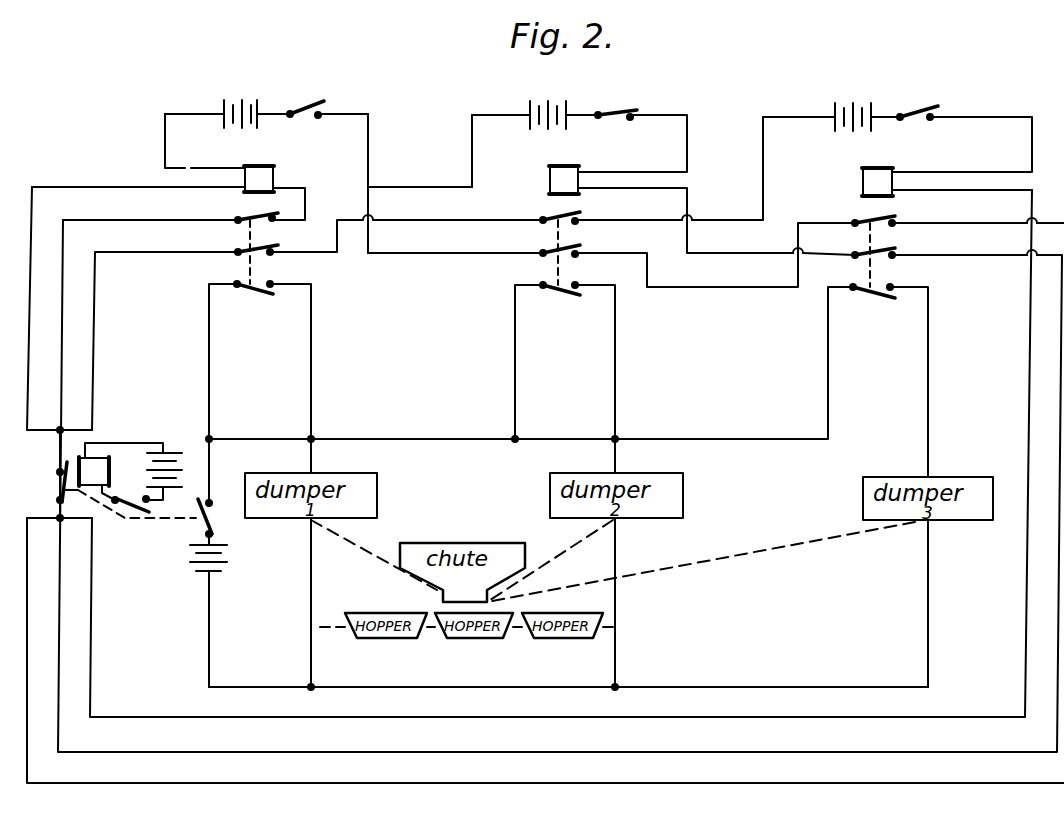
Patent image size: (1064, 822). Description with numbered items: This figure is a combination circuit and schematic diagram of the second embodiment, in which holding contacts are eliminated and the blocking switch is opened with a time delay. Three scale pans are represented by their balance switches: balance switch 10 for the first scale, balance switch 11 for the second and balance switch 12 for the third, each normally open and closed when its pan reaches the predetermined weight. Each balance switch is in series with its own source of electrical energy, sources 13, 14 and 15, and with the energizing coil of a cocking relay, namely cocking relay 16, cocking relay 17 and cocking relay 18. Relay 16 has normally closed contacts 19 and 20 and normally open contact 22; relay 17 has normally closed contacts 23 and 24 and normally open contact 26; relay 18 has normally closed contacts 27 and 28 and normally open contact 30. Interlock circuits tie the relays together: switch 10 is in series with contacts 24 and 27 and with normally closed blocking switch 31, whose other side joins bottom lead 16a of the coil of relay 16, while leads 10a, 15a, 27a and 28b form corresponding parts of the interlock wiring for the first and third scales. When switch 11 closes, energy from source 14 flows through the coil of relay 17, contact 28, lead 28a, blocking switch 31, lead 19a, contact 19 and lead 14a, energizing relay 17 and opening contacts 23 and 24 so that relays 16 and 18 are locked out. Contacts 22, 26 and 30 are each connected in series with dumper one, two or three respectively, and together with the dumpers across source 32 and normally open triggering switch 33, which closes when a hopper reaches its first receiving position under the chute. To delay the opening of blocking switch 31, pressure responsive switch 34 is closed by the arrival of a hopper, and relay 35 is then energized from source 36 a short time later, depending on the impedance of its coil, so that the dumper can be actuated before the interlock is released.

The balance switch 10 is at (318, 118).
The lead 10a is at (369, 148).
The balance switch 11 is at (632, 121).
The balance switch 12 is at (931, 121).
The source of electrical energy 13 is at (256, 106).
The source of electrical energy 14 is at (565, 104).
The lead 14a is at (472, 177).
The source of electrical energy 15 is at (858, 105).
The lead 15a is at (766, 153).
The cocking relay 16 is at (273, 184).
The bottom lead 16a is at (108, 187).
The cocking relay 17 is at (550, 180).
The cocking relay 18 is at (863, 183).
The normally closed contact 19 is at (277, 218).
The lead 19a is at (125, 220).
The normally closed contact 20 is at (272, 252).
The normally open contact 22 is at (271, 287).
The normally closed contact 23 is at (579, 223).
The normally closed contact 24 is at (579, 257).
The normally open contact 26 is at (578, 288).
The normally closed contact 27 is at (895, 225).
The lead 27a is at (340, 783).
The normally closed contact 28 is at (895, 257).
The lead 28a is at (538, 752).
The lead 28b is at (742, 242).
The normally open contact 30 is at (892, 290).
The blocking switch 31 is at (64, 470).
The source of electrical energy 32 is at (229, 559).
The triggering switch 33 is at (213, 500).
The pressure responsive switch 34 is at (152, 504).
The relay 35 is at (96, 468).
The source of electrical energy 36 is at (176, 446).